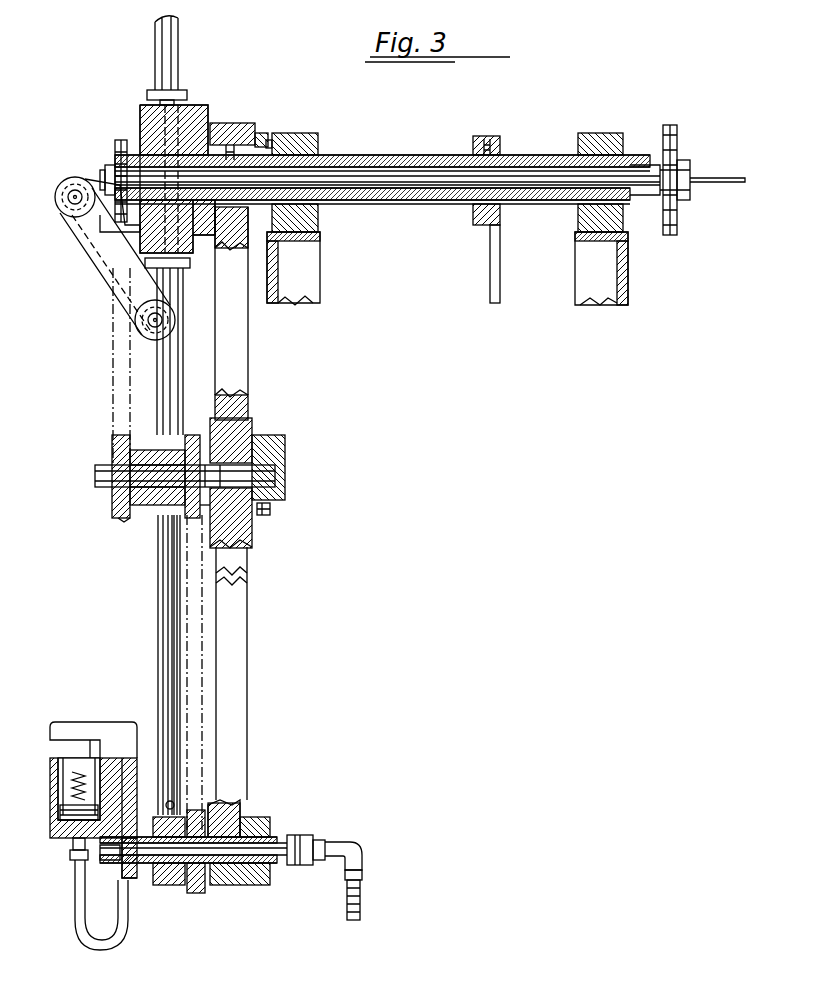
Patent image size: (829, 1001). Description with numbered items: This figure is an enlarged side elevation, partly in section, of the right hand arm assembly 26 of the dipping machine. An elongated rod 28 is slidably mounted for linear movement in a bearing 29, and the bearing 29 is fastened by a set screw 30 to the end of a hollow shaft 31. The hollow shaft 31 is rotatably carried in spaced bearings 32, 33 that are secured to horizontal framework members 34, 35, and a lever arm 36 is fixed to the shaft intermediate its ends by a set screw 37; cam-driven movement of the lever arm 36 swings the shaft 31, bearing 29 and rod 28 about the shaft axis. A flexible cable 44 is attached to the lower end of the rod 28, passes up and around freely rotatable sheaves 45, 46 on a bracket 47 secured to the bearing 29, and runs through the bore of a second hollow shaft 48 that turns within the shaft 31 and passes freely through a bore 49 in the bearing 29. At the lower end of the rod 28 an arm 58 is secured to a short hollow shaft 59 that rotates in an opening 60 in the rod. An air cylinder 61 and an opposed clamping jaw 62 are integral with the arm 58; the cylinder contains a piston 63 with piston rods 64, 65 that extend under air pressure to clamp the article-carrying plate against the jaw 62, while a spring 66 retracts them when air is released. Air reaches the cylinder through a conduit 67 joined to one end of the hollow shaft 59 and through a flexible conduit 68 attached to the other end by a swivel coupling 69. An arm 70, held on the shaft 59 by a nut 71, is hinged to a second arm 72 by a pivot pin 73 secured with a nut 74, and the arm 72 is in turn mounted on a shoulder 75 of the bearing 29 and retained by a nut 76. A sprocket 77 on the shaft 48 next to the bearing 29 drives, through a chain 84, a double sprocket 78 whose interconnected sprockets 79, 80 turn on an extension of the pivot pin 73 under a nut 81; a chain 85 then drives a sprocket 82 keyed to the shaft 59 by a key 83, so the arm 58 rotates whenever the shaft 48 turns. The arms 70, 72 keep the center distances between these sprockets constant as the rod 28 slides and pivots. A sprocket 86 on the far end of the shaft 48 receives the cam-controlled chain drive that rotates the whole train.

The arm assembly 26 is at (283, 602).
The elongated rod 28 is at (158, 598).
The bearing 29 is at (140, 115).
The set screw 30 is at (260, 133).
The hollow shaft 31 is at (350, 155).
The bearing 32 is at (318, 226).
The bearing 33 is at (580, 218).
The horizontal framework member 34 is at (300, 245).
The horizontal framework member 35 is at (590, 245).
The lever arm 36 is at (490, 267).
The set screw 37 is at (485, 136).
The flexible cable 44 is at (168, 672).
The sheave 45 is at (135, 330).
The sheave 46 is at (62, 212).
The bracket 47 is at (102, 265).
The hollow shaft 48 is at (645, 165).
The bore 49 is at (190, 130).
The arm 58 is at (140, 880).
The short hollow shaft 59 is at (165, 870).
The opening 60 is at (195, 880).
The air cylinder 61 is at (50, 835).
The clamping jaw 62 is at (73, 722).
The piston 63 is at (60, 812).
The piston rod 64 is at (60, 755).
The piston rod 65 is at (90, 758).
The spring 66 is at (72, 790).
The conduit 67 is at (75, 915).
The flexible conduit 68 is at (362, 903).
The swivel coupling 69 is at (310, 835).
The arm 70 is at (240, 690).
The nut 71 is at (265, 817).
The second arm 72 is at (240, 357).
The pivot pin 73 is at (252, 445).
The nut 74 is at (265, 455).
The shoulder 75 is at (225, 123).
The nut 76 is at (276, 133).
The sprocket 77 is at (115, 145).
The double sprocket 78 is at (140, 505).
The sprocket 79 is at (115, 510).
The sprocket 80 is at (190, 515).
The nut 81 is at (100, 455).
The sprocket 82 is at (225, 885).
The key 83 is at (240, 808).
The chain 84 is at (113, 381).
The chain 85 is at (190, 638).
The sprocket 86 is at (680, 145).